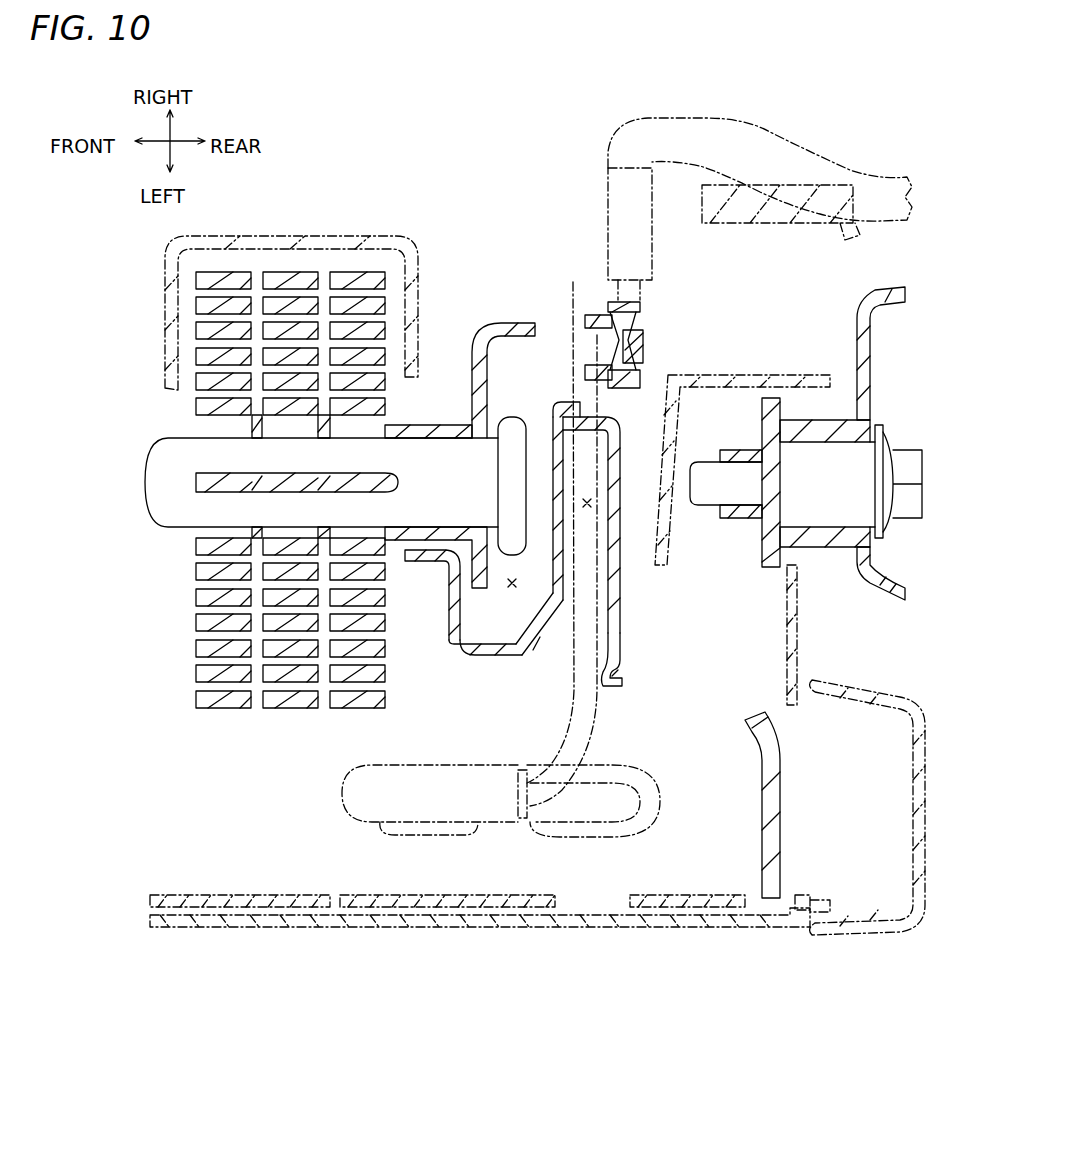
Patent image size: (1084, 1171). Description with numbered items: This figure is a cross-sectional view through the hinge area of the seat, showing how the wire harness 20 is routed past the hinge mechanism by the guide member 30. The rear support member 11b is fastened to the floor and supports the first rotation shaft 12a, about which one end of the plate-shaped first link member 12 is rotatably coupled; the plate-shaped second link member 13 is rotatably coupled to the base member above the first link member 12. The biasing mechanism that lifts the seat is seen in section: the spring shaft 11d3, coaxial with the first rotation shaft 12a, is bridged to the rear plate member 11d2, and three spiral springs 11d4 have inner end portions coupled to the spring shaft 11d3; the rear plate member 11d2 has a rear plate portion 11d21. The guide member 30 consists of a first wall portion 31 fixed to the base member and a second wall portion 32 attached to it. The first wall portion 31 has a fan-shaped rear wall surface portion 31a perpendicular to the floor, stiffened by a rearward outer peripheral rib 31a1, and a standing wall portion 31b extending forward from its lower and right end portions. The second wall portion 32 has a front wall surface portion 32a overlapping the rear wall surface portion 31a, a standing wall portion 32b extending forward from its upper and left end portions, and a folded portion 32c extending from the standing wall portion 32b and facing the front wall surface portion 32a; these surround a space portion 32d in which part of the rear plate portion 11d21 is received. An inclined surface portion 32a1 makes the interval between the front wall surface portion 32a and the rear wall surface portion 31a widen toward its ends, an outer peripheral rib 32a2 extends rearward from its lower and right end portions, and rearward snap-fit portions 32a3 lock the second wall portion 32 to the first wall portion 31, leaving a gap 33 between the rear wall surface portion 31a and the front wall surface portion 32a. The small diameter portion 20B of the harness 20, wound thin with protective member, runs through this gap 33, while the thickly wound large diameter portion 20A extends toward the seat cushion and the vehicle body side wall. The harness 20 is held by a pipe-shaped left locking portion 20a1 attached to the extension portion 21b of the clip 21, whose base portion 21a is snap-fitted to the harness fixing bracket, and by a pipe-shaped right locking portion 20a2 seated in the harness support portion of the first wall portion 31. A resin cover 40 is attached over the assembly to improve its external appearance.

The rear support member 11b is at (870, 352).
The rear plate member 11d2 is at (460, 409).
The rear plate portion 11d21 is at (478, 335).
The spring shaft 11d3 is at (160, 537).
The spiral springs 11d4 is at (225, 708).
The first link member 12 is at (780, 410).
The first rotation shaft 12a is at (707, 505).
The second link member 13 is at (782, 808).
The harness 20 is at (581, 473).
The large diameter portion 20A is at (742, 162).
The small diameter portion 20B is at (597, 700).
The left locking portion 20a1 is at (442, 764).
The right locking portion 20a2 is at (655, 245).
The clip 21 is at (626, 872).
The base portion 21a is at (650, 822).
The extension portion 21b is at (540, 822).
The guide member 30 is at (529, 659).
The first wall portion 31 is at (644, 456).
The rear wall surface portion 31a is at (620, 588).
The outer peripheral rib 31a1 is at (622, 680).
The standing wall portion 31b is at (616, 302).
The second wall portion 32 is at (556, 516).
The front wall surface portion 32a is at (560, 455).
The inclined surface portion 32a1 is at (553, 612).
The outer peripheral rib 32a2 is at (575, 402).
The snap-fit portions 32a3 is at (645, 345).
The standing wall portion 32b is at (490, 655).
The folded portion 32c is at (447, 607).
The space portion 32d is at (512, 588).
The gap 33 is at (598, 508).
The cover 40 is at (275, 236).